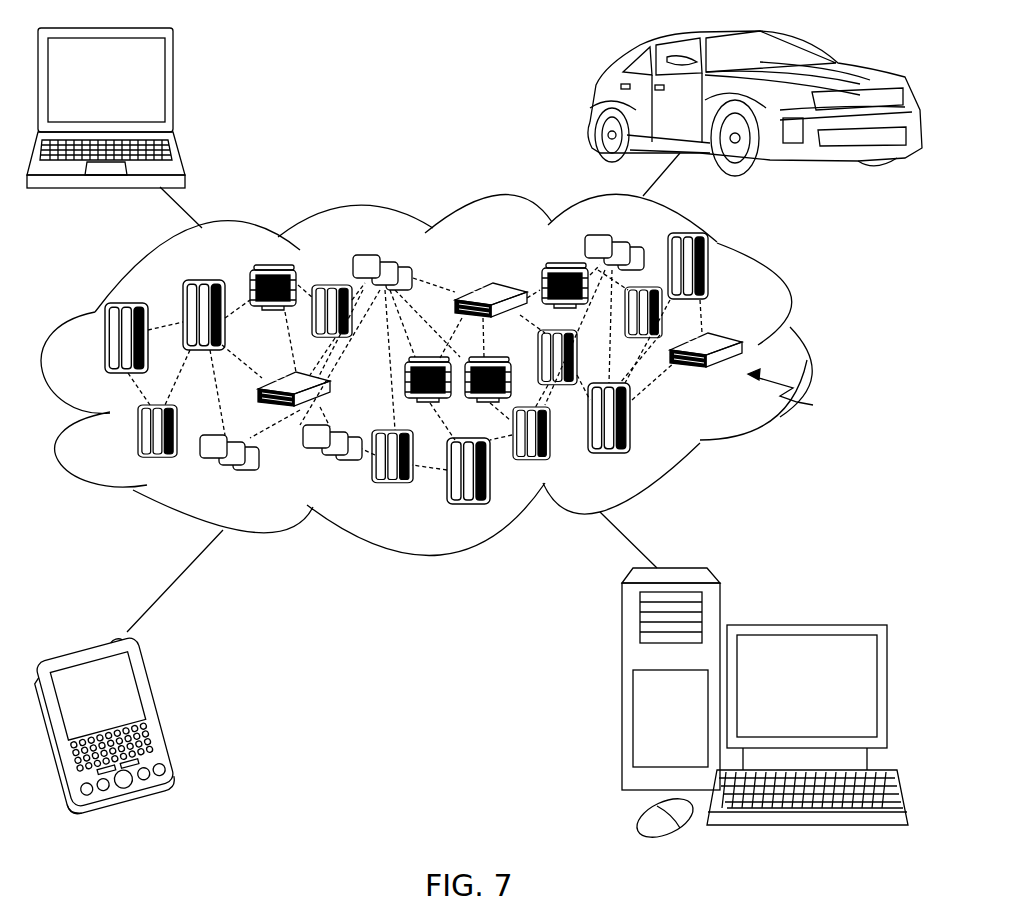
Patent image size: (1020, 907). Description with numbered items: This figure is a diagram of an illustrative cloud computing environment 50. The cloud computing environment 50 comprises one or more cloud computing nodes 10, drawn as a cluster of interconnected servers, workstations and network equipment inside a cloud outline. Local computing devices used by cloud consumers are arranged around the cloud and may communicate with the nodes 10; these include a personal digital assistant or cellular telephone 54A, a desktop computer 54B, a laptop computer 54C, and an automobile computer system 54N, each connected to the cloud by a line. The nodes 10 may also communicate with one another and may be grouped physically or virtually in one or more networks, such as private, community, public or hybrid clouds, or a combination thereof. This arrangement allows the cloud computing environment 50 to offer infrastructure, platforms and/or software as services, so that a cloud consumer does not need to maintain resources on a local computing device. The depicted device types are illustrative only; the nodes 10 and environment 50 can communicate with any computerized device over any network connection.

The cloud computing nodes 10 is at (797, 396).
The cloud computing environment 50 is at (803, 348).
The personal digital assistant (PDA) or cellular telephone 54A is at (160, 713).
The desktop computer 54B is at (802, 624).
The laptop computer 54C is at (173, 89).
The automobile computer system 54N is at (594, 107).